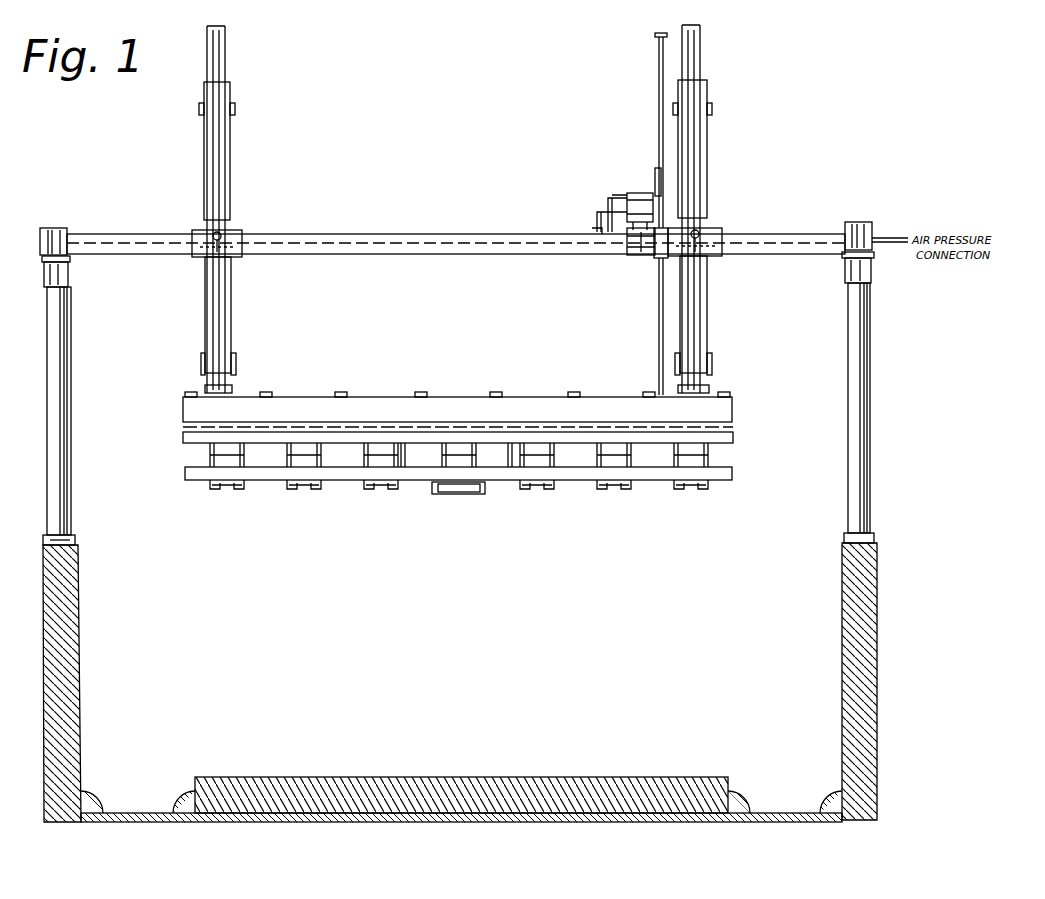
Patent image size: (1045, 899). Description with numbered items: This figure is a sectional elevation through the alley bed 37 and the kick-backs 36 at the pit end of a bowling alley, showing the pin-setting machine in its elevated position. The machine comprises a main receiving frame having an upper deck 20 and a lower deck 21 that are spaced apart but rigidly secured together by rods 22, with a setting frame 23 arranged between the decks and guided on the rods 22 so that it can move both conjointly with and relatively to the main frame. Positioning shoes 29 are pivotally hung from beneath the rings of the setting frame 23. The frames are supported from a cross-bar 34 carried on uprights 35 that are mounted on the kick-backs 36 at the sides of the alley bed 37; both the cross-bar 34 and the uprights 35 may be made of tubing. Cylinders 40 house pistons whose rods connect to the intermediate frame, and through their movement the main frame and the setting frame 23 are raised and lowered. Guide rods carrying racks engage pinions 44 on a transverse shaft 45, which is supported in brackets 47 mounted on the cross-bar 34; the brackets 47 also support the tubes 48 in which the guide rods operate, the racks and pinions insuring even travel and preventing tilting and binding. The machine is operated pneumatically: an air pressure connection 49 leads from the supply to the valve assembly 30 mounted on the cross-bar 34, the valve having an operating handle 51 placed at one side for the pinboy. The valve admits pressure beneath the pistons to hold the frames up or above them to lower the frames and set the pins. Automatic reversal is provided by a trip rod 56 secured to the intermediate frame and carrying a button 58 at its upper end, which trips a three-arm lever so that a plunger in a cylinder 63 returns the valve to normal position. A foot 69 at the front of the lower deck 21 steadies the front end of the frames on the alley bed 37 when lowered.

The upper deck 20 is at (734, 407).
The lower deck 21 is at (734, 468).
The rods 22 is at (412, 455).
The setting frame 23 is at (734, 434).
The positioning shoes 29 is at (368, 488).
The valve 30 is at (640, 193).
The cross-bar 34 is at (131, 242).
The uprights 35 is at (50, 397).
The kick-backs 36 is at (68, 572).
The alley bed 37 is at (397, 777).
The cylinders 40 is at (204, 178).
The pinions 44 is at (200, 258).
The transverse shaft 45 is at (372, 246).
The brackets 47 is at (240, 230).
The tubes 48 is at (219, 174).
The air pressure connection 49 is at (898, 242).
The operating handle 51 is at (657, 172).
The trip rod 56 is at (659, 110).
The button 58 is at (658, 36).
The cylinder 63 is at (658, 286).
The foot 69 is at (460, 495).